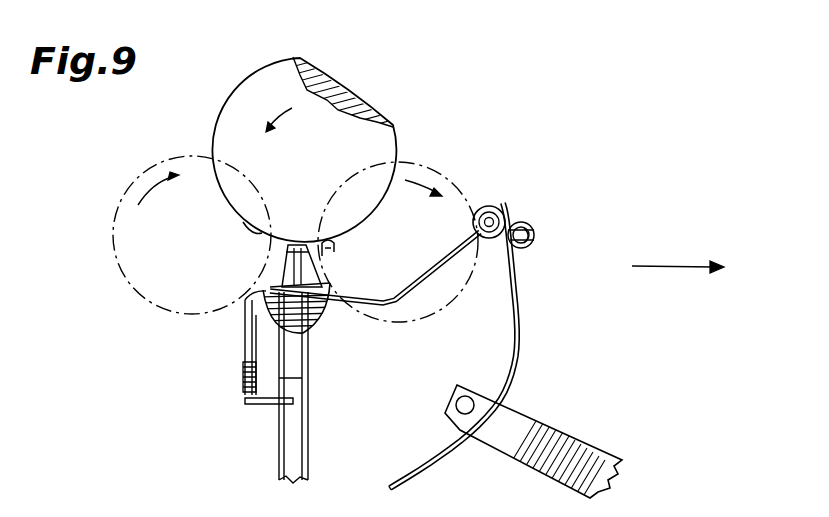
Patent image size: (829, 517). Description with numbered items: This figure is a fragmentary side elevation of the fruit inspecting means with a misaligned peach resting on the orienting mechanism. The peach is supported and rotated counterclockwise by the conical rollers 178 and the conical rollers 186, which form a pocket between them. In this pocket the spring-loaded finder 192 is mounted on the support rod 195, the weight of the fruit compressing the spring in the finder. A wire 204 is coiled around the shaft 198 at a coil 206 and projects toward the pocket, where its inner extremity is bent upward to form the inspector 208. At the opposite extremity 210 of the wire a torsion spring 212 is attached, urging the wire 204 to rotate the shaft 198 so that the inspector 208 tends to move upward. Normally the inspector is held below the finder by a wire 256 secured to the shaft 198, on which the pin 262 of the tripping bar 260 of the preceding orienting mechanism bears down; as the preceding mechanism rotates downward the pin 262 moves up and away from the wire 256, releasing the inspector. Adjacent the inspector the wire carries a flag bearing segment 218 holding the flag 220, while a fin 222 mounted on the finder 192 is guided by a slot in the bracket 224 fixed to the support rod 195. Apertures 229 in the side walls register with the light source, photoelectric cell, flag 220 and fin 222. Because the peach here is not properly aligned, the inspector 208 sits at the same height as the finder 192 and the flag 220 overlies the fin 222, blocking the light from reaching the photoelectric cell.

The conical rollers 178 is at (180, 158).
The conical rollers 186 is at (428, 166).
The finder 192 is at (285, 258).
The support rod 195 is at (283, 412).
The shaft 198 is at (506, 216).
The wire 204 is at (419, 300).
The coil 206 is at (490, 207).
The inspector 208 is at (336, 247).
The extremity of wire 210 is at (532, 226).
The torsion spring 212 is at (535, 240).
The flag bearing segment 218 is at (312, 300).
The flag 220 is at (305, 333).
The fin 222 is at (244, 318).
The bracket 224 is at (250, 399).
The apertures 229 is at (252, 372).
The wire 256 is at (518, 362).
The tripping bar 260 is at (596, 452).
The pin 262 is at (456, 404).